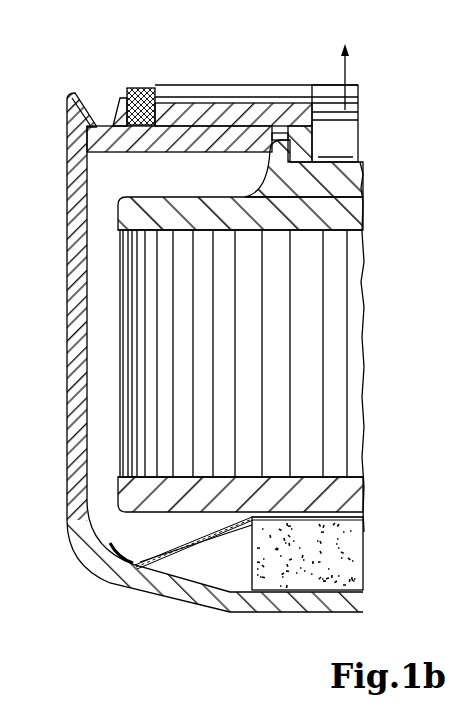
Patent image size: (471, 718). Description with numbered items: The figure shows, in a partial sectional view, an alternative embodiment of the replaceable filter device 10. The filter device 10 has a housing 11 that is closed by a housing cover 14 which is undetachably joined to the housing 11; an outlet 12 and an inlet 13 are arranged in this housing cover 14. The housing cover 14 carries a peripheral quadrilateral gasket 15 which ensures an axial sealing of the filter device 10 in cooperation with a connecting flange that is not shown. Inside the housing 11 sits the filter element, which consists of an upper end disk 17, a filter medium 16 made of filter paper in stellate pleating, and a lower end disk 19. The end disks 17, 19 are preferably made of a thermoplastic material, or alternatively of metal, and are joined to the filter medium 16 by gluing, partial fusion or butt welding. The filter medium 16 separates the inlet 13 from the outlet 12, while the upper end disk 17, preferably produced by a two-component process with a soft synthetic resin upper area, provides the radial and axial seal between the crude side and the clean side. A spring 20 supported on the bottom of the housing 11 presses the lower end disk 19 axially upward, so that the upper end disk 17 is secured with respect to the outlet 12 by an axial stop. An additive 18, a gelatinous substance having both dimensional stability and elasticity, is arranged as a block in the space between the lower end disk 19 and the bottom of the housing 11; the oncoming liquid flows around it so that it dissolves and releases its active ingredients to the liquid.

The filter device 10 is at (375, 180).
The housing 11 is at (82, 316).
The outlet 12 is at (325, 117).
The inlet 13 is at (240, 152).
The housing cover 14 is at (263, 117).
The quadrilateral gasket 15 is at (142, 88).
The filter medium 16 is at (338, 372).
The upper end disk 17 is at (333, 207).
The additive 18 is at (347, 550).
The lower end disk 19 is at (343, 498).
The spring 20 is at (167, 562).